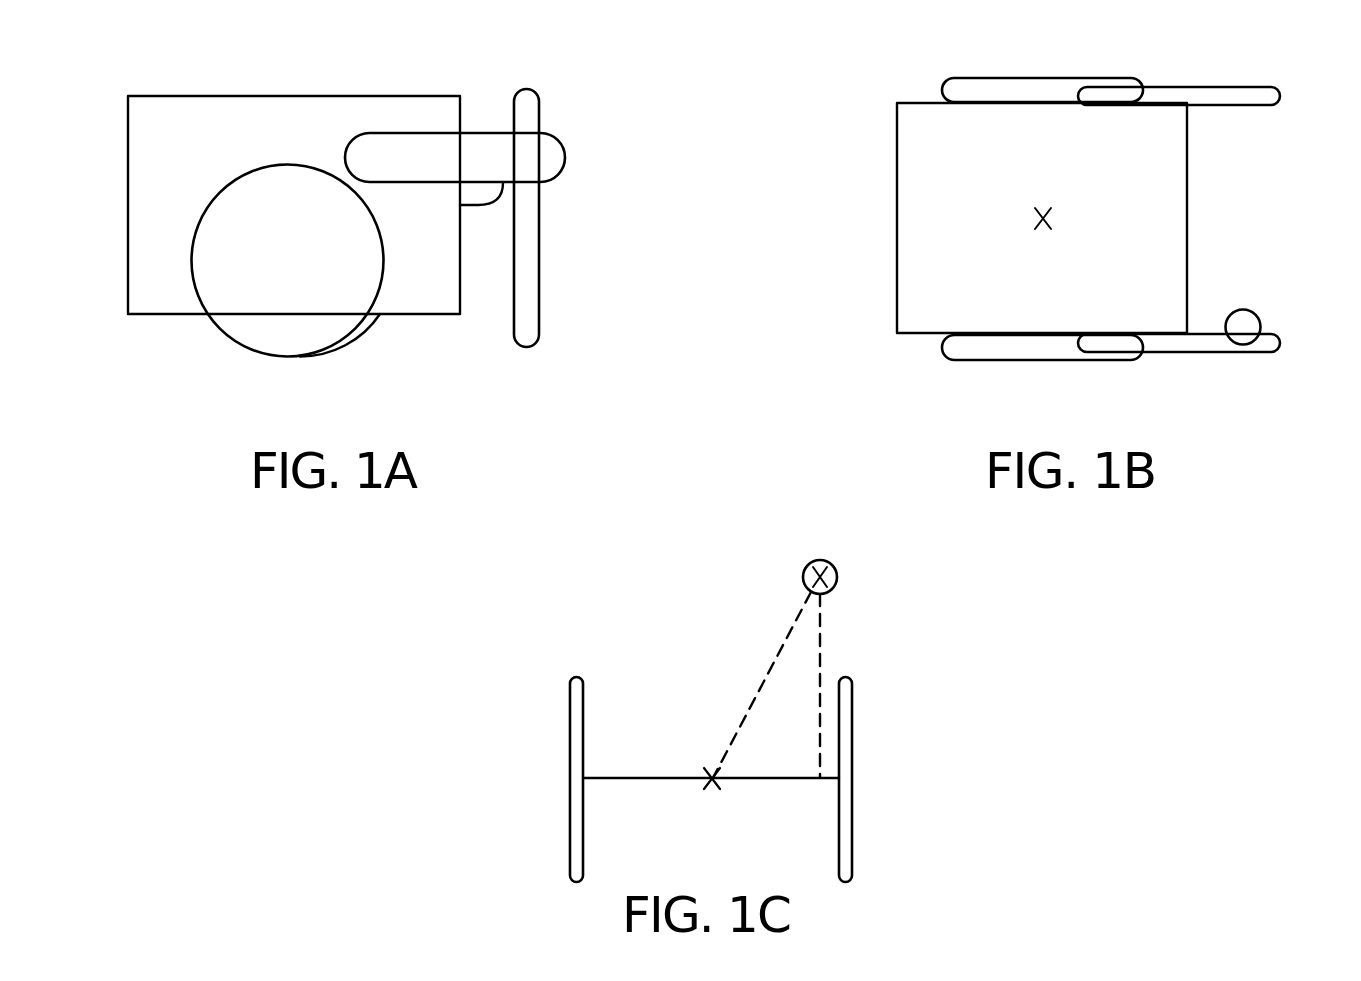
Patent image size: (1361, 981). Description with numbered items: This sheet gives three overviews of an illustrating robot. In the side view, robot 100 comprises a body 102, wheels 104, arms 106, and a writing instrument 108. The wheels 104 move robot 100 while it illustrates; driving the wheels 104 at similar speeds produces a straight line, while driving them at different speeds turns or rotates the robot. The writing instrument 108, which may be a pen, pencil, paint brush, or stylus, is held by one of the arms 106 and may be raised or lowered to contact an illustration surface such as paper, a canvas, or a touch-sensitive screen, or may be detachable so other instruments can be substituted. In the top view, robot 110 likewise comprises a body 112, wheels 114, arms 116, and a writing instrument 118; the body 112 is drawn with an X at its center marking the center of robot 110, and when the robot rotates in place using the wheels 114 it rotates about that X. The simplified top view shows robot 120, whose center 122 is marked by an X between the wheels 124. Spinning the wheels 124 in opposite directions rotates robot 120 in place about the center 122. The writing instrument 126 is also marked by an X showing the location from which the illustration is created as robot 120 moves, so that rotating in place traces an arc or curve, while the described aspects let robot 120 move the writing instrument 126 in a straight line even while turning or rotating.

In FIG. 1A, the robot 100 is at (497, 55).
In FIG. 1A, the body 102 is at (127, 207).
In FIG. 1A, the wheels 104 is at (337, 348).
In FIG. 1A, the arms 106 is at (565, 157).
In FIG. 1A, the writing instrument 108 is at (540, 280).
In FIG. 1B, the robot 110 is at (1263, 54).
In FIG. 1B, the body 112 is at (896, 212).
In FIG. 1B, the wheels 114 is at (1042, 78).
In FIG. 1B, the arms 116 is at (1176, 87).
In FIG. 1B, the writing instrument 118 is at (1262, 327).
In FIG. 1C, the robot 120 is at (855, 519).
In FIG. 1C, the center 122 is at (728, 790).
In FIG. 1C, the wheels 124 is at (569, 780).
In FIG. 1C, the writing instrument 126 is at (838, 577).